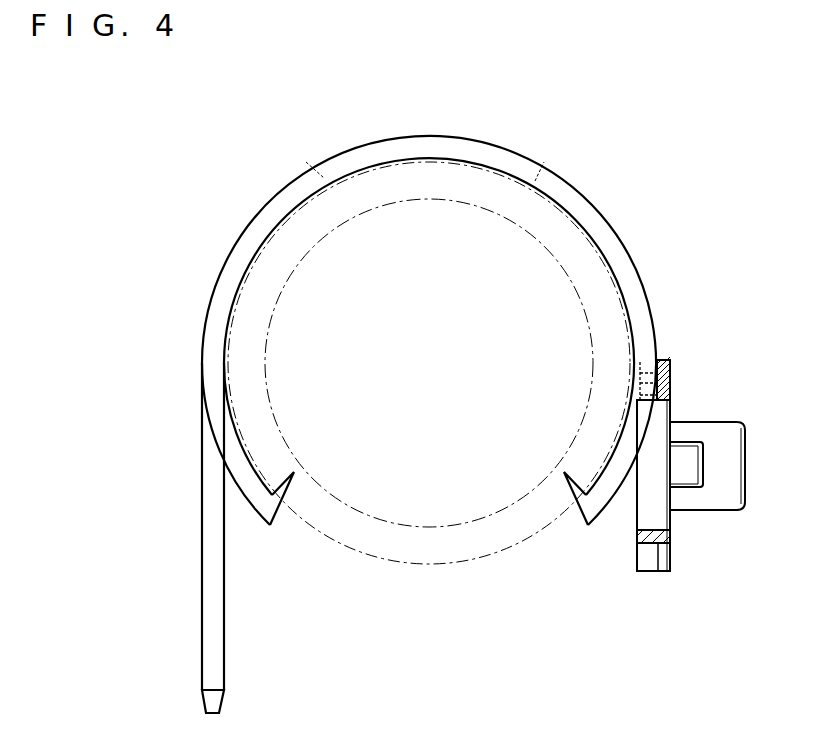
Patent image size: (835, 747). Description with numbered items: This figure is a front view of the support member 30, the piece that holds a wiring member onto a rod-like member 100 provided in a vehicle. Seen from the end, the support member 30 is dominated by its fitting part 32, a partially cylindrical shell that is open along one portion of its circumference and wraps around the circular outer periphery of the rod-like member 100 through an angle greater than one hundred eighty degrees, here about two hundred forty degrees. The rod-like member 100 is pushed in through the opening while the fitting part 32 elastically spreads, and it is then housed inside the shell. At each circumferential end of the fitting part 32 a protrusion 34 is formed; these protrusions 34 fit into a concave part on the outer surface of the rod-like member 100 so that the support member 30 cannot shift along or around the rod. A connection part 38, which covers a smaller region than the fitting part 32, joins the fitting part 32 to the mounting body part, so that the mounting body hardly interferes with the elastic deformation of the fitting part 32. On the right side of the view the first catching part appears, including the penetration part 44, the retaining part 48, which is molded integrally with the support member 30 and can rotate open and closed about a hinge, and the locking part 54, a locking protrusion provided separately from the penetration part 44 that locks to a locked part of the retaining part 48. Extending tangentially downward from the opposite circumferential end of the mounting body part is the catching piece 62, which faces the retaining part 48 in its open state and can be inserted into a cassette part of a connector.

The support member 30 is at (205, 110).
The fitting part 32 is at (227, 263).
The protrusion 34 is at (294, 488).
The connection part 38 is at (302, 168).
The penetration part 44 is at (683, 481).
The retaining part 48 is at (643, 510).
The locking part 54 is at (717, 421).
The catching piece 62 is at (207, 608).
The rod-like member 100 is at (432, 566).